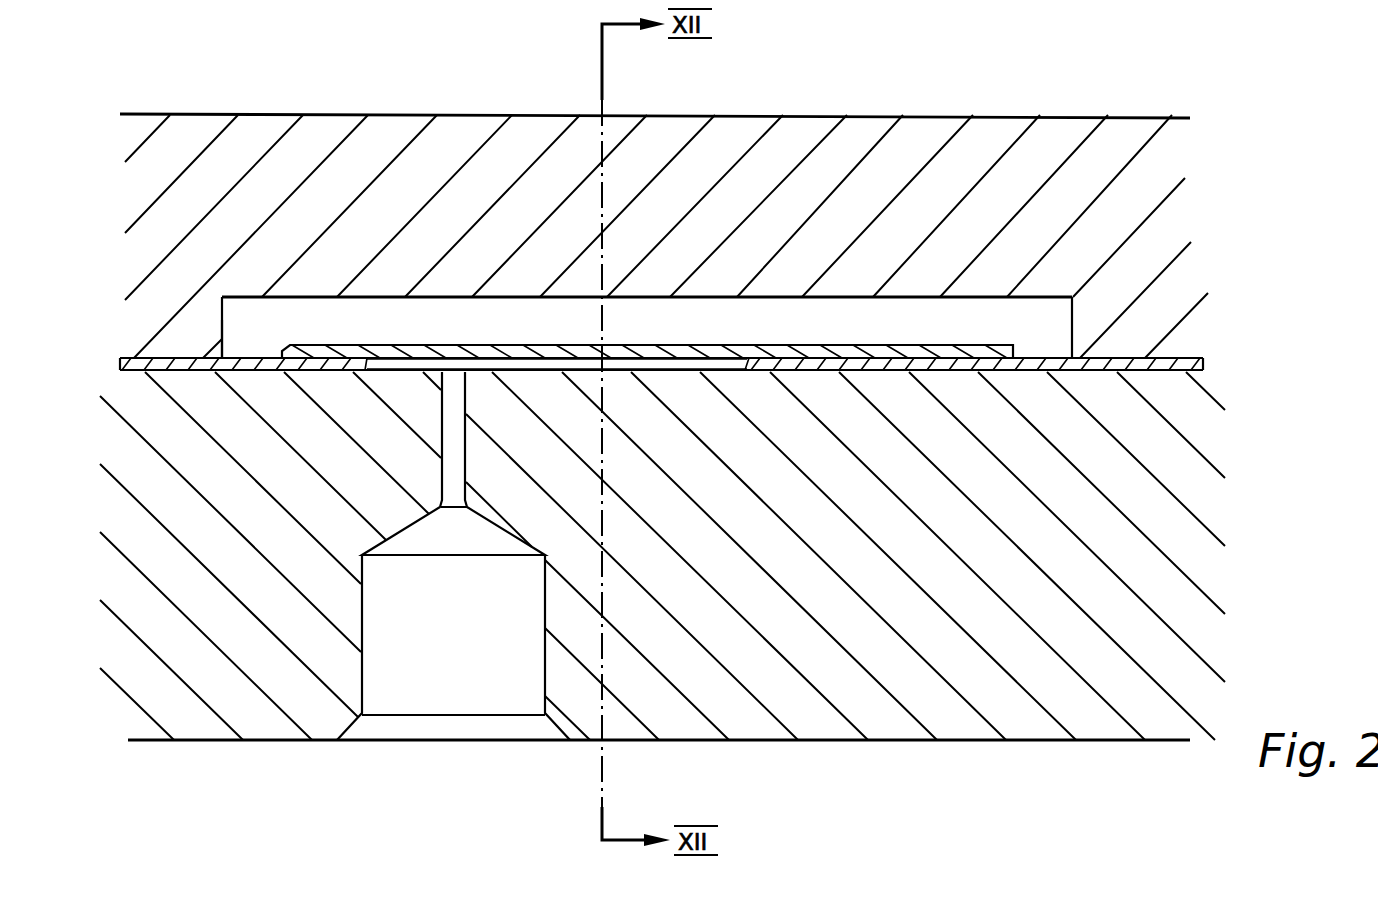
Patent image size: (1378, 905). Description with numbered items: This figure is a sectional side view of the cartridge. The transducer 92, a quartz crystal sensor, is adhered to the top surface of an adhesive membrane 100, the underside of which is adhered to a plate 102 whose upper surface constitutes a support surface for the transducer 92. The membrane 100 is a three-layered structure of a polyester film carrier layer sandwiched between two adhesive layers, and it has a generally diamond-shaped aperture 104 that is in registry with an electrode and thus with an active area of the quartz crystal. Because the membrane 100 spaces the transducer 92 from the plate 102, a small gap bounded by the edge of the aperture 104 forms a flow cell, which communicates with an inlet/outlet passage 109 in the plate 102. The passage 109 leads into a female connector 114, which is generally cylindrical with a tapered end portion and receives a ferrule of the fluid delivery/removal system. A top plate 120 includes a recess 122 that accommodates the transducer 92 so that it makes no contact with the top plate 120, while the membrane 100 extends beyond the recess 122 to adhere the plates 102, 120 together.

The top plate 120 is at (244, 114).
The plate 102 is at (970, 735).
The adhesive membrane 100 is at (143, 372).
The aperture 104 is at (657, 375).
The transducer 92 is at (335, 345).
The recess 122 is at (223, 323).
The inlet/outlet passage 109 is at (442, 431).
The female connector 114 is at (363, 699).